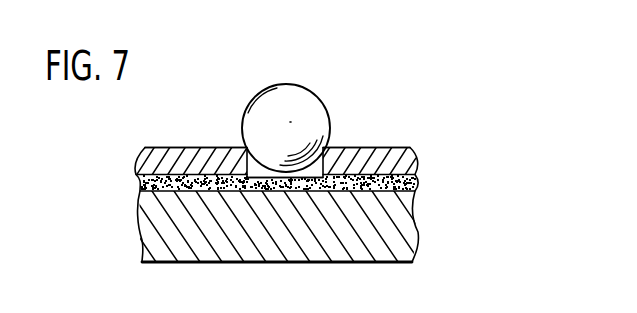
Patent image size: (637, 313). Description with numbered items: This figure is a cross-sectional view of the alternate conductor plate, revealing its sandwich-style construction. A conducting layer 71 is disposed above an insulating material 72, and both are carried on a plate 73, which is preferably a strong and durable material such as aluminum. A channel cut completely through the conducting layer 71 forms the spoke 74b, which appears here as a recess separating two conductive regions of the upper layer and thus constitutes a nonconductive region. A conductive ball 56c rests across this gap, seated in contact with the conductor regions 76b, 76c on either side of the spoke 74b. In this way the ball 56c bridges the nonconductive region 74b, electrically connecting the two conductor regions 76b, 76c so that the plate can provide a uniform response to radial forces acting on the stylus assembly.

The conductive ball 56c is at (283, 97).
The conducting layer 71 is at (416, 157).
The insulating material 72 is at (418, 182).
The plate 73 is at (416, 228).
The spoke 74b is at (313, 175).
The conductor region 76b is at (345, 147).
The conductor region 76c is at (217, 147).